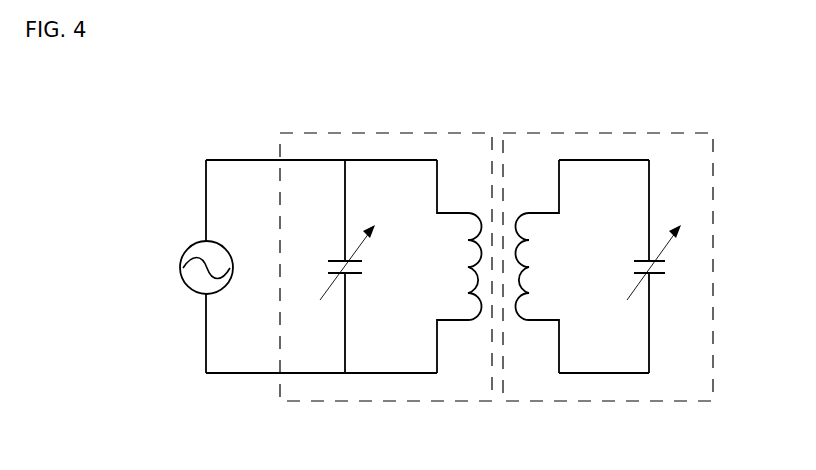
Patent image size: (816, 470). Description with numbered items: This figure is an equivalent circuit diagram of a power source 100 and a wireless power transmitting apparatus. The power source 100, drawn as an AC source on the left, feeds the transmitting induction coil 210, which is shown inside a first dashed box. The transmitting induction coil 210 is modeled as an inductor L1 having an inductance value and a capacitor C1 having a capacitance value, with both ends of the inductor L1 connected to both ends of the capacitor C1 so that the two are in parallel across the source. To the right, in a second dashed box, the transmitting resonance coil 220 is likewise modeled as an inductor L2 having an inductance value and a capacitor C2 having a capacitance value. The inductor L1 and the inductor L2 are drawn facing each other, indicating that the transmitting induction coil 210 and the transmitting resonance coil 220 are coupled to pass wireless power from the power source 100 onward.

The power source 100 is at (181, 262).
The transmitting induction coil 210 is at (386, 242).
The transmitting resonance coil 220 is at (608, 242).
The capacitor C1 is at (337, 266).
The inductor L1 is at (459, 266).
The inductor L2 is at (538, 266).
The capacitor C2 is at (660, 266).